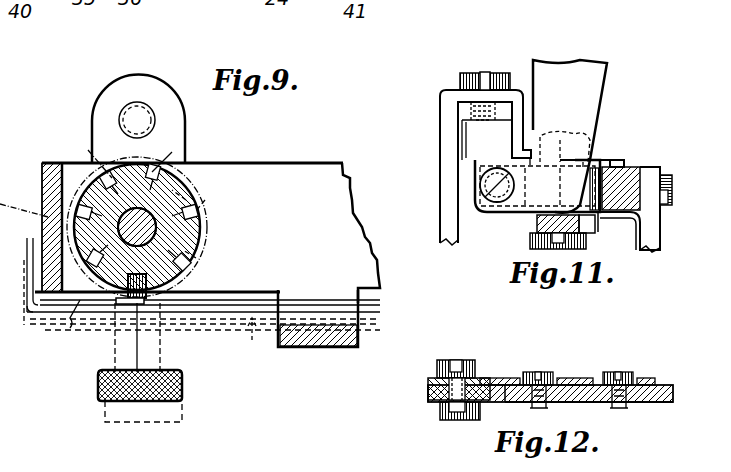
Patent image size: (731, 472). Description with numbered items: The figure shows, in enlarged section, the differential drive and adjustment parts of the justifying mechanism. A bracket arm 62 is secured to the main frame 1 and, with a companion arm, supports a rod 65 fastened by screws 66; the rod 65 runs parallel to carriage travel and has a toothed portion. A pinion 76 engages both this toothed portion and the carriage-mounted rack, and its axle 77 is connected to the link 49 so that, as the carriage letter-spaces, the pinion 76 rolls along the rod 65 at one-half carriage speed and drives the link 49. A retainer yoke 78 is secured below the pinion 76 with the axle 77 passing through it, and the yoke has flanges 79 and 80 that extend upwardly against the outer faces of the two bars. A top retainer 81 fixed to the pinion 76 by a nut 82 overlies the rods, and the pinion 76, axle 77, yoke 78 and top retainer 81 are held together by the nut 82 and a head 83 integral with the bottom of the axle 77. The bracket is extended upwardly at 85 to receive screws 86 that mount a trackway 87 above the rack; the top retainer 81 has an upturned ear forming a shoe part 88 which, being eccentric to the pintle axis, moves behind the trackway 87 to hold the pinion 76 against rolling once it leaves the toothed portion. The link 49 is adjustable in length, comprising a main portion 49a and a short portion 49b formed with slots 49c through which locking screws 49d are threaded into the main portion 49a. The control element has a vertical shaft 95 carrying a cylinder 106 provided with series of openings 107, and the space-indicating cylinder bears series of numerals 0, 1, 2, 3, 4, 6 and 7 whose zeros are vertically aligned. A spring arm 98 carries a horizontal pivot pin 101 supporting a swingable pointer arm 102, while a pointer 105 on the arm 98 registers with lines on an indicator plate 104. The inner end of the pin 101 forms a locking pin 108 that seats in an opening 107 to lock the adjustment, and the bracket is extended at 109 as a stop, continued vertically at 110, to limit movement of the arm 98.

In FIG. 9, the justifying space indicating numeral 0 is at (196, 258).
In FIG. 9, the main frame 1 is at (200, 224).
In FIG. 9, the justifying space indicating numeral 2 is at (190, 181).
In FIG. 9, the justifying space indicating numeral 3 is at (150, 165).
In FIG. 9, the justifying space indicating numeral 4 is at (88, 150).
In FIG. 9, the justifying space indicating numeral 6 is at (30, 308).
In FIG. 9, the justifying space indicating numeral 7 is at (140, 348).
In FIG. 9, the vertical shaft 95 is at (204, 200).
In FIG. 9, the spring arm 98 is at (258, 300).
In FIG. 9, the horizontal pivot pin 101 is at (172, 152).
In FIG. 9, the swingable pointer arm 102 is at (70, 328).
In FIG. 9, the indicator plate 104 is at (42, 176).
In FIG. 9, the pointer 105 is at (32, 238).
In FIG. 9, the cylinder 106 is at (99, 162).
In FIG. 9, the openings 107 is at (196, 236).
In FIG. 9, the locking pin 108 is at (176, 318).
In FIG. 9, the stop portion 109 is at (340, 297).
In FIG. 9, the vertical extension of stop portion 110 is at (354, 346).
In FIG. 11, the link 49 is at (530, 228).
In FIG. 12, the link 49 is at (665, 385).
In FIG. 12, the main link portion 49a is at (658, 402).
In FIG. 12, the adjustable short link portion 49b is at (498, 378).
In FIG. 12, the slots 49c is at (572, 378).
In FIG. 12, the locking screws 49d is at (552, 364).
In FIG. 11, the bracket arm 62 is at (660, 228).
In FIG. 11, the rod 65 is at (632, 167).
In FIG. 11, the screws 66 is at (670, 175).
In FIG. 11, the pinion 76 is at (600, 214).
In FIG. 11, the axle 77 is at (580, 130).
In FIG. 11, the retainer yoke 78 is at (625, 222).
In FIG. 11, the flange 79 is at (466, 192).
In FIG. 11, the flange 80 is at (670, 200).
In FIG. 11, the top retainer 81 is at (606, 160).
In FIG. 11, the nut 82 is at (590, 150).
In FIG. 11, the head 83 is at (532, 246).
In FIG. 11, the bracket extension 85 is at (447, 140).
In FIG. 11, the screws 86 is at (476, 73).
In FIG. 11, the trackway 87 is at (527, 125).
In FIG. 11, the shoe part 88 is at (510, 140).